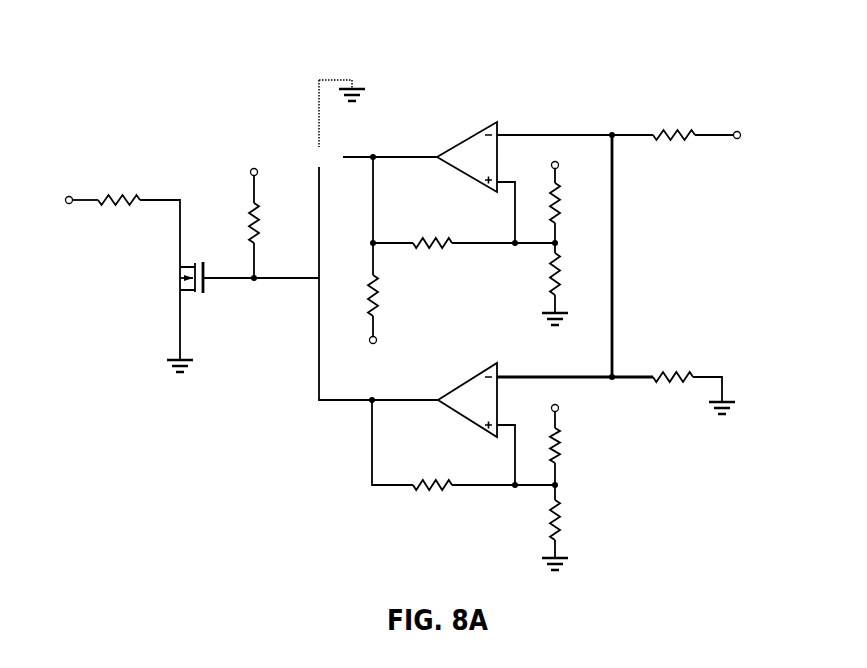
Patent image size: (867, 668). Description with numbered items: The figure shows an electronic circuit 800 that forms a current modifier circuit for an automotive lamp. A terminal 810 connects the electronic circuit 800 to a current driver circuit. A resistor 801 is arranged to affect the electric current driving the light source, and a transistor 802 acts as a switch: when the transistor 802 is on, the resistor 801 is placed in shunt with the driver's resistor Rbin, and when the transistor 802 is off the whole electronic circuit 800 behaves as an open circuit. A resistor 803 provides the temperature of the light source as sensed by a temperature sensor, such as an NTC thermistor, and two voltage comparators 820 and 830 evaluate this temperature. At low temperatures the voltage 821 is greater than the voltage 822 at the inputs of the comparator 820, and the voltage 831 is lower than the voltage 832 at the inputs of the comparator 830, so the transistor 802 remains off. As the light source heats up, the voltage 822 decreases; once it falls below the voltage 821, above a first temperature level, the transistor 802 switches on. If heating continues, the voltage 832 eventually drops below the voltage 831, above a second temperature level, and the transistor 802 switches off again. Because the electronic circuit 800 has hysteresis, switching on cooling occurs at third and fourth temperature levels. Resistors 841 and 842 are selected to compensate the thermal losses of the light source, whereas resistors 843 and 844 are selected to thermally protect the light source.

The electronic circuit 800 is at (188, 100).
The resistor 801 is at (123, 218).
The transistor 802 is at (207, 303).
The resistor 803 is at (670, 357).
The terminal 810 is at (70, 212).
The voltage comparator 820 is at (475, 408).
The voltage 821 is at (507, 412).
The voltage 822 is at (503, 383).
The voltage comparator 830 is at (473, 148).
The voltage 831 is at (505, 173).
The voltage 832 is at (507, 125).
The resistor 841 is at (572, 445).
The resistor 842 is at (572, 518).
The resistor 843 is at (570, 197).
The resistor 844 is at (572, 273).